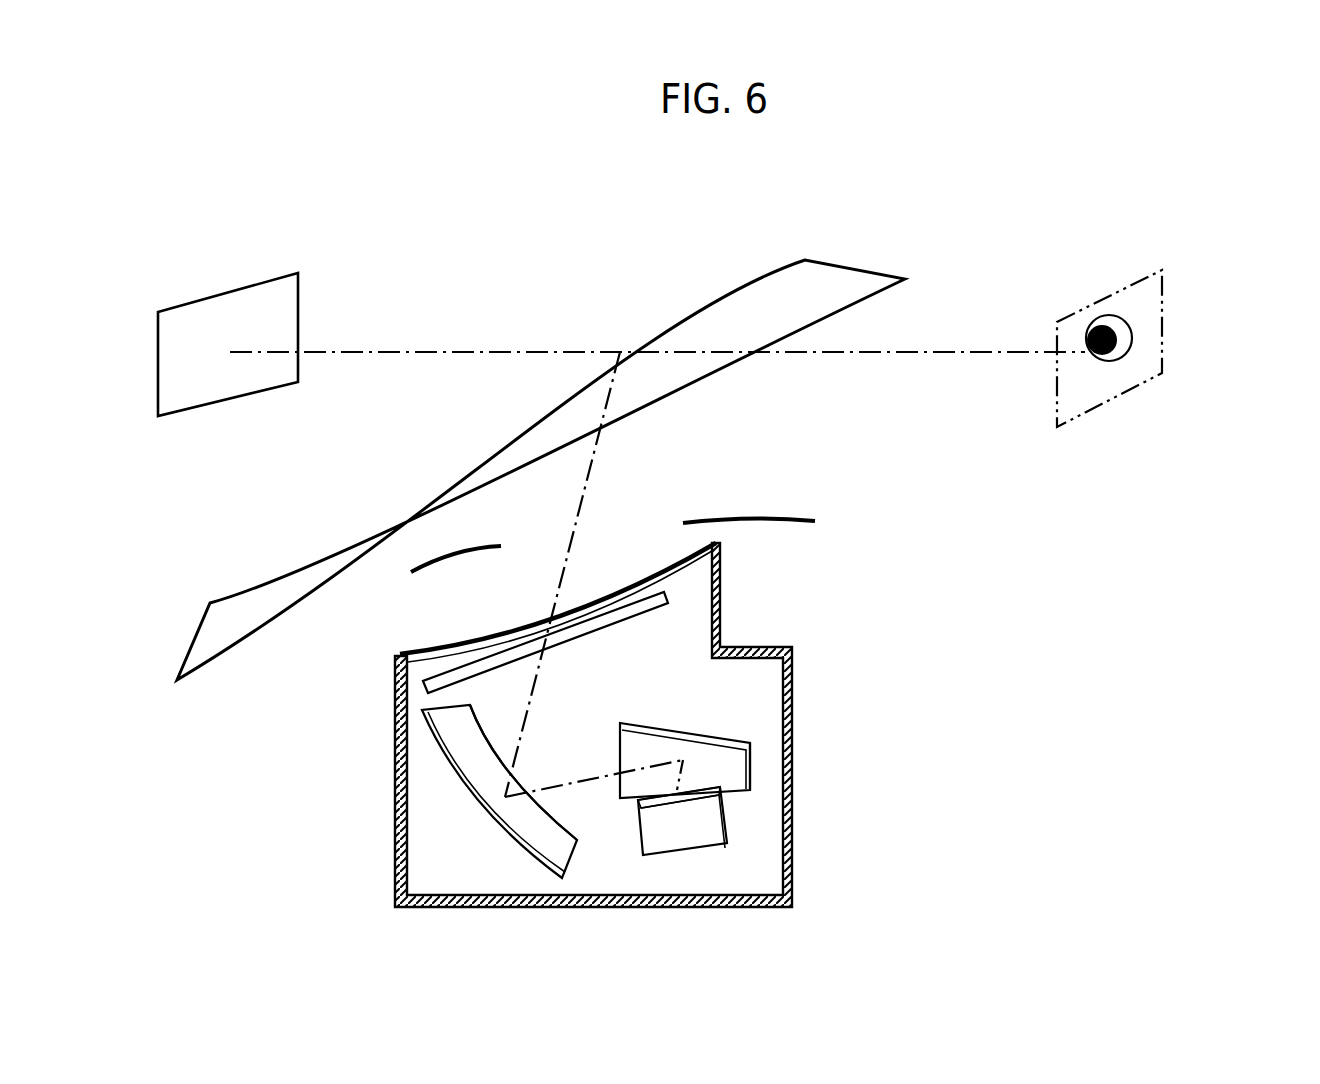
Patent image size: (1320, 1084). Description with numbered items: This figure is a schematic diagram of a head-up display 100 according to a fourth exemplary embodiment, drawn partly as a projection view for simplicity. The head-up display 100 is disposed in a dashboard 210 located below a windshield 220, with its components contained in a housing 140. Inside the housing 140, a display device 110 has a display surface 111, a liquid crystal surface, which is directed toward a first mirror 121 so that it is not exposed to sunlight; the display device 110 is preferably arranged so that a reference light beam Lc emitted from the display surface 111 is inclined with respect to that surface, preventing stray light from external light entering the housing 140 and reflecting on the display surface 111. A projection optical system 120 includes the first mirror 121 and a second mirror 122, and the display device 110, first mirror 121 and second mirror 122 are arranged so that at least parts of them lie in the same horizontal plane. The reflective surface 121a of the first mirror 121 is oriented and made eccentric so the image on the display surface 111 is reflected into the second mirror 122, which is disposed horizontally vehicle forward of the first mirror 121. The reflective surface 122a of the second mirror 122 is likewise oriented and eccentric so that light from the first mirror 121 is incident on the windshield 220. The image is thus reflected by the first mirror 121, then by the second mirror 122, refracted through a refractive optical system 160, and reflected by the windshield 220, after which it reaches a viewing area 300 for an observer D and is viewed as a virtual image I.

The head-up display 100 is at (328, 815).
The display device 110 is at (752, 821).
The display surface 111 is at (727, 798).
The projection optical system 120 is at (929, 582).
The first mirror 121 is at (773, 719).
The reflective surface of first mirror 121a is at (727, 768).
The second mirror 122 is at (603, 732).
The reflective surface of second mirror 122a is at (463, 750).
The housing 140 is at (792, 873).
The refractive optical system 160 is at (443, 677).
The dashboard 210 is at (777, 520).
The windshield 220 is at (765, 272).
The viewing area 300 is at (1137, 280).
The observer D is at (1128, 324).
The virtual image I is at (187, 302).
The reference light beam Lc is at (980, 350).